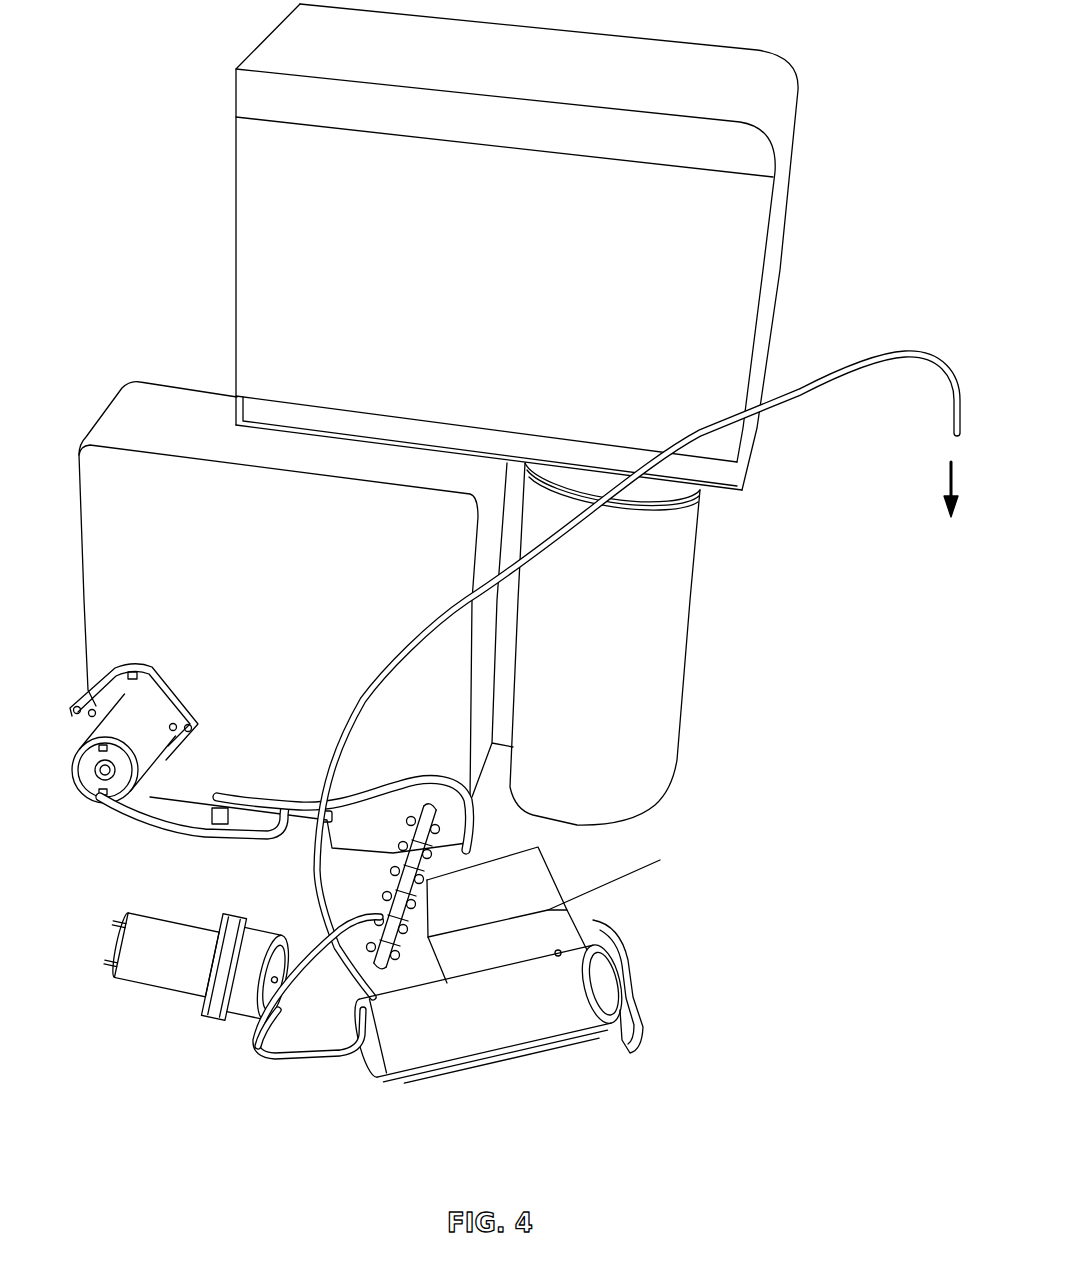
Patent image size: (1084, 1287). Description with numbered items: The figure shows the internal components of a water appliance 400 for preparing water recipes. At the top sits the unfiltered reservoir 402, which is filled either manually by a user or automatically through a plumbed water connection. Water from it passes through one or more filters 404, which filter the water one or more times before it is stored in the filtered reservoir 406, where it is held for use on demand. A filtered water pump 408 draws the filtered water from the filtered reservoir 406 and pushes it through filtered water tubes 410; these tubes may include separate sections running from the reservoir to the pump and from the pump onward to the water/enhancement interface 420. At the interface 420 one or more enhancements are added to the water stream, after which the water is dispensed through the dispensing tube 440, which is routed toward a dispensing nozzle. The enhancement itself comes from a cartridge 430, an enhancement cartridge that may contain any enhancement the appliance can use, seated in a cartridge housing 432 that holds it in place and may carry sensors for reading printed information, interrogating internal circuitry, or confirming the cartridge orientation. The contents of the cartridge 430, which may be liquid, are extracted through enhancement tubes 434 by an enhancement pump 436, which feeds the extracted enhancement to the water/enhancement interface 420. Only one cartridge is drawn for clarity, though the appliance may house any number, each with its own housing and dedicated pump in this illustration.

The water appliance 400 is at (503, 590).
The unfiltered reservoir 402 is at (517, 247).
The filters 404 is at (586, 644).
The filtered reservoir 406 is at (278, 617).
The filtered water pump 408 is at (73, 703).
The filtered water tubes 410 is at (150, 790).
The water/enhancement interface 420 is at (425, 883).
The cartridge 430 is at (490, 1016).
The cartridge housing 432 is at (660, 860).
The enhancement tubes 434 is at (308, 1053).
The enhancement pump 436 is at (180, 993).
The dispensing tube 440 is at (637, 640).